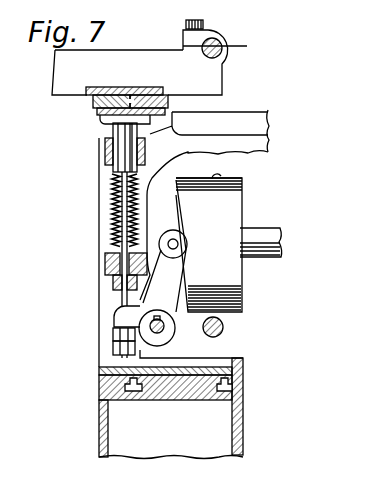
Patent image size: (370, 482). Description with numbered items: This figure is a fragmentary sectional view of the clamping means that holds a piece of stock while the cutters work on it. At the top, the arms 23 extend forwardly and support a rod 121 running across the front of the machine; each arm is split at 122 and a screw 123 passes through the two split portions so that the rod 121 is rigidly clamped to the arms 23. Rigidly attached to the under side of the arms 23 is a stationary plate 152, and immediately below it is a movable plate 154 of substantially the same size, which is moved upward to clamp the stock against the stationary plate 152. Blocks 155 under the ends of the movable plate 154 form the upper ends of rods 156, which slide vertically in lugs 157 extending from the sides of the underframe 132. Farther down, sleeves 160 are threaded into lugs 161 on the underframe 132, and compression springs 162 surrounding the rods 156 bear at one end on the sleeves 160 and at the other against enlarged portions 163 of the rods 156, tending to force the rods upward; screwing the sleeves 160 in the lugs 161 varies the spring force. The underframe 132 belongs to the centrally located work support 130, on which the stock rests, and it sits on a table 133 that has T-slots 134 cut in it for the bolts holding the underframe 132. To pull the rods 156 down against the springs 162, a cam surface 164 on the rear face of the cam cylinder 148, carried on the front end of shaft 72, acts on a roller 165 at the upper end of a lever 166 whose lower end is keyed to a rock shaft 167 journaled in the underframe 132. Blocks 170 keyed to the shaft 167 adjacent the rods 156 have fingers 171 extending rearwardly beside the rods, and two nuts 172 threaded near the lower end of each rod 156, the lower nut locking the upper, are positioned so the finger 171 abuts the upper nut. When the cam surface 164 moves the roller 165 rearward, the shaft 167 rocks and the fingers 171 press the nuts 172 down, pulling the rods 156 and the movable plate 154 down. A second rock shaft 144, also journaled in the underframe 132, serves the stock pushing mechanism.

The arms 23 is at (70, 71).
The rod 121 is at (241, 48).
The split 122 is at (182, 45).
The screw 123 is at (186, 24).
The work support 130 is at (247, 118).
The stationary plate 152 is at (82, 96).
The movable plate 154 is at (100, 118).
The blocks 155 is at (100, 128).
The lugs 157 is at (107, 152).
The enlarged portions 163 is at (125, 152).
The compression springs 162 is at (117, 188).
The rods 156 is at (128, 203).
The roller 165 is at (172, 233).
The cam cylinder 148 is at (225, 210).
The shaft 72 is at (265, 238).
The lugs 161 is at (107, 256).
The sleeves 160 is at (115, 280).
The cam surface 164 is at (178, 290).
The lever 166 is at (162, 292).
The fingers 171 is at (127, 319).
The rock shaft 167 is at (113, 328).
The nuts 172 is at (113, 350).
The rock shaft 144 is at (224, 327).
The blocks 170 is at (163, 339).
The underframe 132 is at (108, 370).
The table 133 is at (100, 391).
The T-slots 134 is at (198, 400).